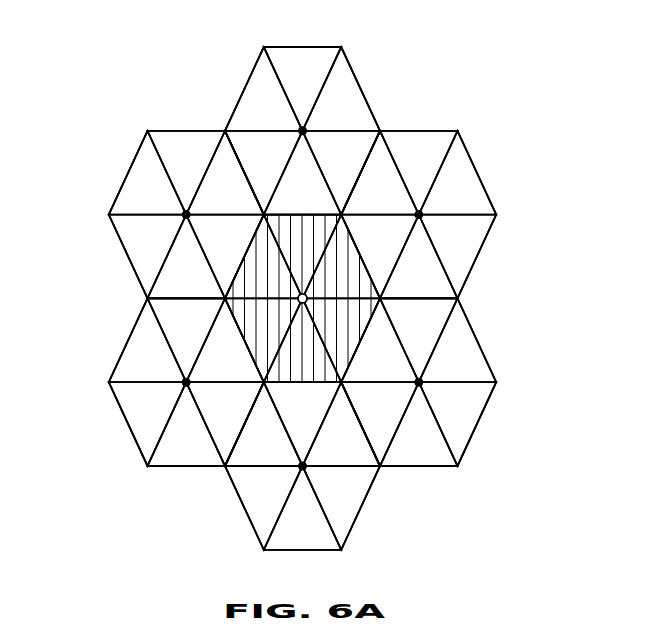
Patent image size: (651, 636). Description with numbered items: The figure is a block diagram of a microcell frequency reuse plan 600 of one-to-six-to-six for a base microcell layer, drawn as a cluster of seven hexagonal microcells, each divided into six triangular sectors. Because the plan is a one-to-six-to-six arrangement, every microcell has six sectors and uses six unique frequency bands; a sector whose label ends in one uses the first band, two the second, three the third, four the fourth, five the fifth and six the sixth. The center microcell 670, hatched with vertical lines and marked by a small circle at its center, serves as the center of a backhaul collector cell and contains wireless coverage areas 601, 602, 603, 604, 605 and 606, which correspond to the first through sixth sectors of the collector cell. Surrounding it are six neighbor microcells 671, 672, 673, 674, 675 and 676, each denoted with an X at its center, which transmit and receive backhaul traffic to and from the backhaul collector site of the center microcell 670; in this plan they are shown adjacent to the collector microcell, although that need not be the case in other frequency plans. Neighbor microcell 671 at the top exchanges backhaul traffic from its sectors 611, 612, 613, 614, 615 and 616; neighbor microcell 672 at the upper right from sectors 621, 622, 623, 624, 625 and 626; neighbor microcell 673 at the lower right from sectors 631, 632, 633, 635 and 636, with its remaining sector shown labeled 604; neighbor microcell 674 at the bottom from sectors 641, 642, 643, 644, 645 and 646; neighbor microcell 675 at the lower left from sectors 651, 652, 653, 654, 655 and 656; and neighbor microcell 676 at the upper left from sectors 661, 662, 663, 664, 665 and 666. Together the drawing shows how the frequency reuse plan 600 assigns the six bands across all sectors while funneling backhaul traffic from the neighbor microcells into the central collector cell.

The microcell frequency reuse plan 600 is at (300, 288).
The wireless coverage area 601 is at (302, 257).
The wireless coverage area 602 is at (264, 257).
The wireless coverage area 603 is at (264, 340).
The wireless coverage area 604 is at (361, 382).
The wireless coverage area 605 is at (342, 340).
The wireless coverage area 606 is at (342, 257).
The sector 611 is at (302, 89).
The sector 612 is at (264, 89).
The sector 613 is at (264, 173).
The sector 614 is at (302, 173).
The sector 615 is at (342, 173).
The sector 616 is at (342, 89).
The sector 621 is at (419, 173).
The sector 622 is at (380, 173).
The sector 623 is at (380, 257).
The sector 624 is at (419, 257).
The sector 625 is at (457, 257).
The sector 626 is at (457, 173).
The sector 631 is at (419, 340).
The sector 632 is at (380, 340).
The sector 633 is at (380, 424).
The sector 635 is at (457, 424).
The sector 636 is at (457, 340).
The sector 641 is at (302, 424).
The sector 642 is at (264, 424).
The sector 643 is at (264, 508).
The sector 644 is at (302, 508).
The sector 645 is at (342, 508).
The sector 646 is at (342, 424).
The sector 651 is at (187, 340).
The sector 652 is at (147, 340).
The sector 653 is at (147, 424).
The sector 654 is at (187, 424).
The sector 655 is at (225, 424).
The sector 656 is at (225, 340).
The sector 661 is at (187, 173).
The sector 662 is at (147, 173).
The sector 663 is at (147, 257).
The sector 664 is at (187, 257).
The sector 665 is at (225, 257).
The sector 666 is at (225, 173).
The center microcell 670 is at (379, 298).
The neighbor microcell 671 is at (303, 115).
The neighbor microcell 672 is at (419, 201).
The neighbor microcell 673 is at (456, 382).
The neighbor microcell 674 is at (264, 472).
The neighbor microcell 675 is at (146, 382).
The neighbor microcell 676 is at (181, 199).